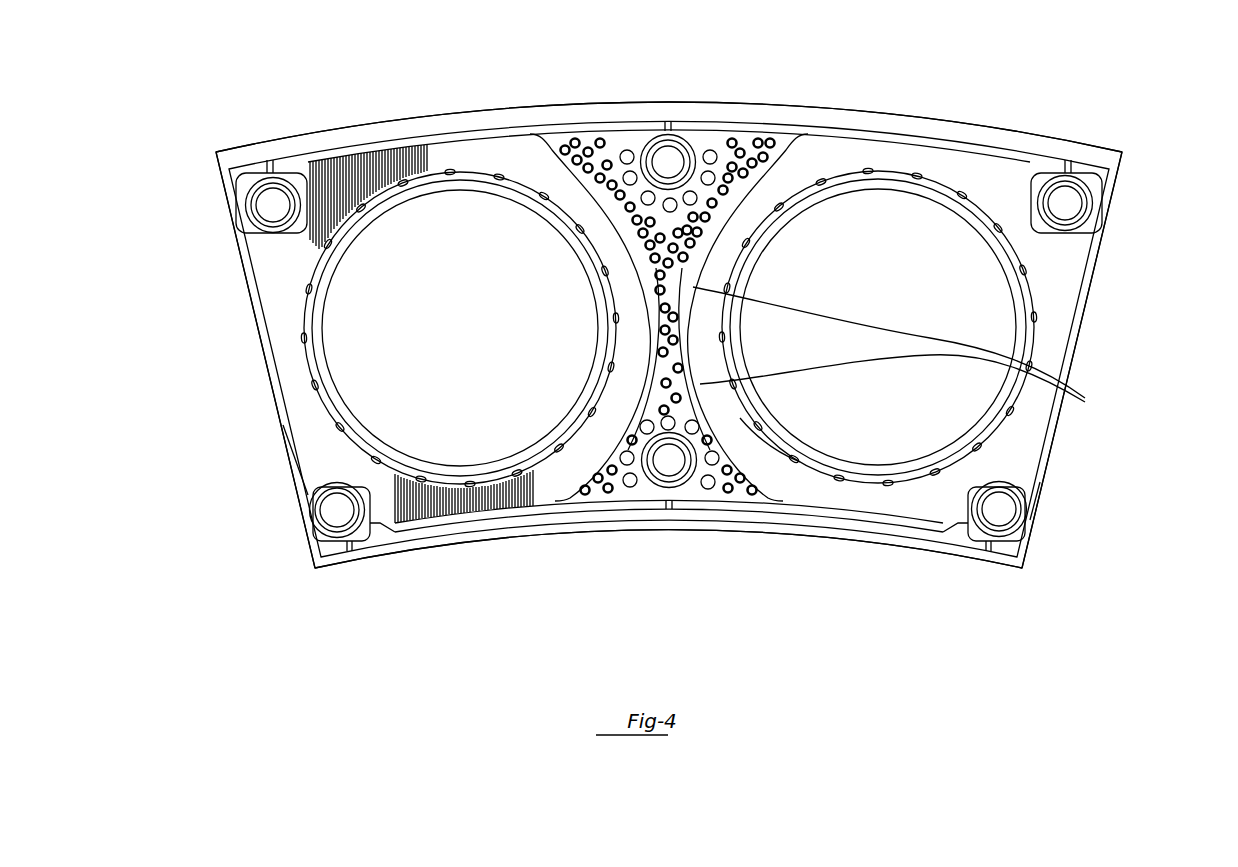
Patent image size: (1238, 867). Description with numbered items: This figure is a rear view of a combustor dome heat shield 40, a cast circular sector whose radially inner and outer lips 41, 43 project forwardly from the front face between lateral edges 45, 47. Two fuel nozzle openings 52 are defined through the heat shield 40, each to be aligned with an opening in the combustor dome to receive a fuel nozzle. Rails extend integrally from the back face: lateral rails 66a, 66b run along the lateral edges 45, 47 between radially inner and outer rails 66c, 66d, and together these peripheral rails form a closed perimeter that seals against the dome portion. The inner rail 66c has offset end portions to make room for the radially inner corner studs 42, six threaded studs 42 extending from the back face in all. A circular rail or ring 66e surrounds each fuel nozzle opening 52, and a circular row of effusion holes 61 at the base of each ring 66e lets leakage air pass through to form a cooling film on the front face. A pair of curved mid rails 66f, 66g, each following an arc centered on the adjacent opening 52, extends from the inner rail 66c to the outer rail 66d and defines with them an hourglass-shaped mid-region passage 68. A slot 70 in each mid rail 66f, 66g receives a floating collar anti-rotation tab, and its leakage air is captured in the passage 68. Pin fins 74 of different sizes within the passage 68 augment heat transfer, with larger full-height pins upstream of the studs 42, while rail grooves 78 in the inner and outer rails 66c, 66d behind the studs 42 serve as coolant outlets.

The dome heat shield 40 is at (172, 115).
The radially inner lip 41 is at (913, 540).
The threaded stud 42 is at (1065, 203).
The radially outer lip 43 is at (1120, 150).
The lateral edge 45 is at (262, 368).
The lateral edge 47 is at (1085, 322).
The fuel nozzle opening 52 is at (386, 304).
The effusion hole 61 is at (328, 245).
The lateral rail 66a is at (283, 425).
The lateral rail 66b is at (1040, 482).
The radially inner rail 66c is at (375, 540).
The radially outer rail 66d is at (368, 150).
The circular rail or ring 66e is at (372, 433).
The mid rail 66f is at (636, 293).
The mid rail 66g is at (740, 418).
The mid-region passage 68 is at (678, 273).
The slot 70 is at (901, 355).
The pin fin 74 is at (762, 143).
The rail groove 78 is at (270, 160).